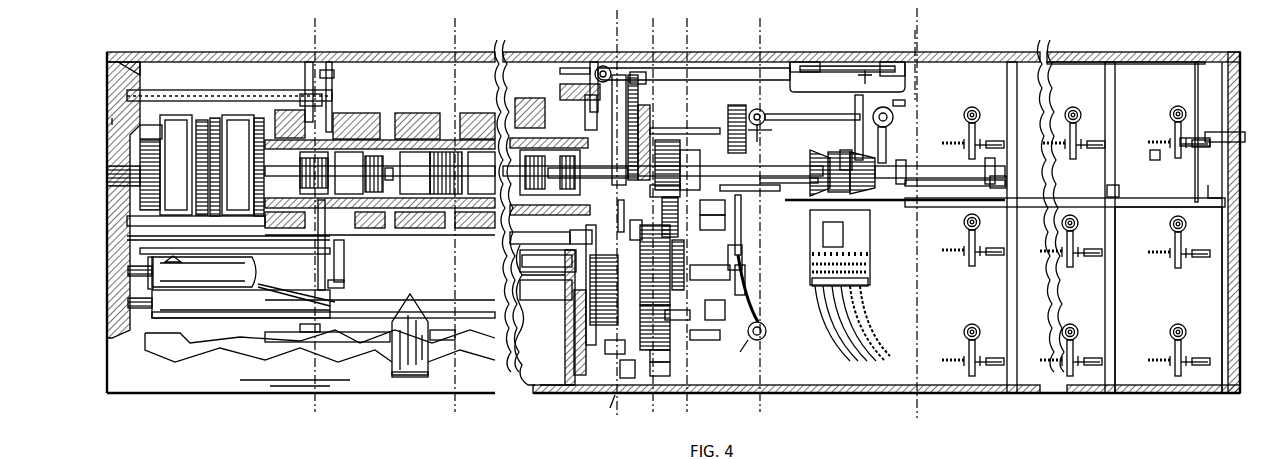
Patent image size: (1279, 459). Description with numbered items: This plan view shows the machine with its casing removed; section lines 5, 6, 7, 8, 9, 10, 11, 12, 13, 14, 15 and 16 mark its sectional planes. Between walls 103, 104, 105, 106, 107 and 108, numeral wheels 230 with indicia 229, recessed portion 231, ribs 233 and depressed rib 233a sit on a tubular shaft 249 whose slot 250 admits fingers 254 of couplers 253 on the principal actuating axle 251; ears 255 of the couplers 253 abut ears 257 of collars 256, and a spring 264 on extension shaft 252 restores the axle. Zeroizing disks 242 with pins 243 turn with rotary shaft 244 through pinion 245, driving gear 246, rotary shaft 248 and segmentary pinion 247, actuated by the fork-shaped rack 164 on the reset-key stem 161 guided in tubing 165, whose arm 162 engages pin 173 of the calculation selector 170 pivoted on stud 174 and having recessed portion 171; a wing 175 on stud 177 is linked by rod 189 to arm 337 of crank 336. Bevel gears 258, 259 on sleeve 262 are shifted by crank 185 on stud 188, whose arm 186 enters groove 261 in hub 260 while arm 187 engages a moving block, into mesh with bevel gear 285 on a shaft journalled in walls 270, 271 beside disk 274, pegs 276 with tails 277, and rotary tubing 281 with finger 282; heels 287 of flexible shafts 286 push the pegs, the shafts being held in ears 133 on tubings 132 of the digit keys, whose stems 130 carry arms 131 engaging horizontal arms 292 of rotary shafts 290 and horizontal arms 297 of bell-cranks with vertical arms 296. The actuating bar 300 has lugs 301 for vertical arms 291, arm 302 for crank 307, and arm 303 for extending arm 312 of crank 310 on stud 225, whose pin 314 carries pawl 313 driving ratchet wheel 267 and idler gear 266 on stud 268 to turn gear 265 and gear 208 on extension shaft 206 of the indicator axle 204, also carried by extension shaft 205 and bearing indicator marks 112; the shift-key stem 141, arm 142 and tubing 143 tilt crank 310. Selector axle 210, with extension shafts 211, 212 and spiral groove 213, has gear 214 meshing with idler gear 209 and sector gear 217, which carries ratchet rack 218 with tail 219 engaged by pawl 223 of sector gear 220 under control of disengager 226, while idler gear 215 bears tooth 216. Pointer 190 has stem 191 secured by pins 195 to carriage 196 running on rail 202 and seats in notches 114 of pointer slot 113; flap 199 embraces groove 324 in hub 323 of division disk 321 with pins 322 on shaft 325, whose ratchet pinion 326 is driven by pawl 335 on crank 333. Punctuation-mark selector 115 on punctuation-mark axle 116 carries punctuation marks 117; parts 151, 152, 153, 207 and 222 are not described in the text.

The section line 5 is at (80, 207).
The section line 6 is at (80, 382).
The section line 7 is at (313, 33).
The section line 8 is at (457, 33).
The section line 9 is at (629, 17).
The section line 10 is at (655, 33).
The section line 11 is at (689, 33).
The section line 12 is at (762, 33).
The section line 13 is at (919, 15).
The section line 14 is at (540, 92).
The section line 15 is at (770, 264).
The section line 16 is at (785, 238).
The housing end wall 103 is at (112, 120).
The housing end wall 104 is at (1240, 252).
The housing bottom wall 105 is at (1168, 393).
The housing top wall 106 is at (141, 60).
The partition 107 is at (519, 315).
The plate 108 is at (630, 130).
The plate 112 is at (200, 277).
The lever 113 is at (170, 350).
The lever 114 is at (222, 356).
The bar 115 is at (627, 209).
The bar 116 is at (140, 222).
The bar 117 is at (150, 240).
The boss 130 is at (978, 107).
The pin 131 is at (1165, 150).
The screw 132 is at (968, 110).
The stem 133 is at (965, 370).
The pin 141 is at (750, 340).
The lever 142 is at (752, 300).
The pivot 143 is at (766, 334).
The lever 151 is at (742, 210).
The lever 152 is at (740, 257).
The bar 153 is at (750, 191).
The stem 161 is at (759, 139).
The bar 162 is at (812, 109).
The pawl 164 is at (752, 110).
The spring 165 is at (765, 126).
The bracket 170 is at (893, 62).
The line 171 is at (916, 62).
The arm 173 is at (855, 110).
The screw 174 is at (858, 62).
The plate 175 is at (796, 62).
The bracket 177 is at (812, 62).
The arm 185 is at (902, 145).
The collar 186 is at (857, 148).
The pin 187 is at (905, 104).
The pivot 188 is at (899, 123).
The bar 189 is at (705, 68).
The pointer 190 is at (410, 334).
The base 191 is at (422, 382).
The stop 195 is at (455, 336).
The lug 196 is at (308, 332).
The bar 199 is at (348, 340).
The plate 202 is at (567, 350).
The housing 204 is at (204, 271).
The shaft 205 is at (130, 272).
The block 206 is at (547, 268).
The block 207 is at (536, 266).
The gear 208 is at (667, 327).
The gear 209 is at (640, 262).
The bar 210 is at (462, 308).
The shaft 211 is at (130, 304).
The line 212 is at (530, 288).
The bar 213 is at (270, 290).
The gear 214 is at (605, 322).
The block 215 is at (546, 298).
The plate 216 is at (594, 332).
The block 217 is at (632, 378).
The block 218 is at (610, 356).
The block 219 is at (617, 413).
The gear 220 is at (665, 352).
The bar 222 is at (713, 339).
The gear 223 is at (668, 370).
The bar 225 is at (683, 317).
The gear 226 is at (659, 212).
The counter wheel 229 is at (173, 116).
The block 230 is at (140, 133).
The pinion 231 is at (218, 118).
The pinion 233 is at (262, 120).
The block 233a is at (292, 110).
The plate 242 is at (325, 98).
The plate 243 is at (310, 66).
The shaft 244 is at (186, 89).
The rack 245 is at (650, 126).
The bracket 246 is at (598, 62).
The pin 247 is at (760, 110).
The bar 248 is at (688, 128).
The frame 249 is at (446, 212).
The roller 250 is at (147, 175).
The shaft 251 is at (110, 172).
The shaft 252 is at (775, 172).
The collar 253 is at (355, 158).
The pin 254 is at (388, 166).
The block 255 is at (402, 150).
The block 256 is at (480, 150).
The collar 257 is at (418, 152).
The bevel gear 258 is at (815, 169).
The bevel gear 259 is at (864, 168).
The shaft 260 is at (905, 172).
The bar 261 is at (940, 186).
The gear 262 is at (838, 152).
The gear 264 is at (666, 163).
The gear 265 is at (728, 122).
The collar 266 is at (681, 191).
The gear 267 is at (685, 180).
The bar 268 is at (645, 212).
The bracket 270 is at (812, 300).
The box 271 is at (870, 214).
The wire 274 is at (868, 266).
The wire 276 is at (868, 274).
The cable 277 is at (870, 300).
The contacts 281 is at (868, 256).
The block 282 is at (823, 248).
The bar 285 is at (820, 185).
The cable 286 is at (870, 330).
The cable 287 is at (872, 316).
The plate 290 is at (1115, 88).
The block 291 is at (1128, 187).
The plate 292 is at (1196, 130).
The shaft 296 is at (1241, 140).
The bar 297 is at (1192, 148).
The panel 300 is at (1160, 200).
The bracket 301 is at (1208, 192).
The collar 302 is at (990, 184).
The block 303 is at (711, 204).
The collar 307 is at (980, 164).
The block 310 is at (723, 317).
The block 312 is at (711, 219).
The bar 313 is at (710, 279).
The bar 314 is at (754, 280).
The link 321 is at (296, 300).
The plate 322 is at (318, 265).
The plate 323 is at (344, 262).
The block 324 is at (340, 285).
The bar 325 is at (150, 252).
The block 326 is at (563, 235).
The cylinder 333 is at (550, 172).
The frame 335 is at (550, 177).
The shaft 336 is at (588, 136).
The pivot 337 is at (585, 83).